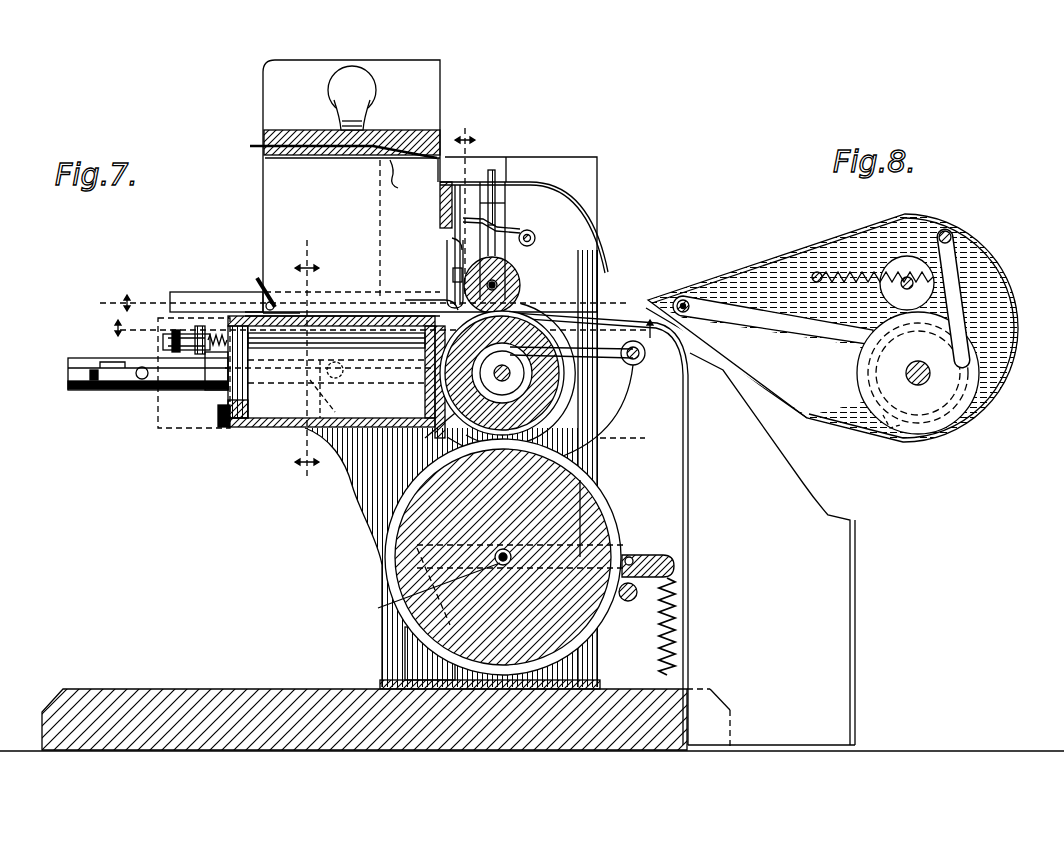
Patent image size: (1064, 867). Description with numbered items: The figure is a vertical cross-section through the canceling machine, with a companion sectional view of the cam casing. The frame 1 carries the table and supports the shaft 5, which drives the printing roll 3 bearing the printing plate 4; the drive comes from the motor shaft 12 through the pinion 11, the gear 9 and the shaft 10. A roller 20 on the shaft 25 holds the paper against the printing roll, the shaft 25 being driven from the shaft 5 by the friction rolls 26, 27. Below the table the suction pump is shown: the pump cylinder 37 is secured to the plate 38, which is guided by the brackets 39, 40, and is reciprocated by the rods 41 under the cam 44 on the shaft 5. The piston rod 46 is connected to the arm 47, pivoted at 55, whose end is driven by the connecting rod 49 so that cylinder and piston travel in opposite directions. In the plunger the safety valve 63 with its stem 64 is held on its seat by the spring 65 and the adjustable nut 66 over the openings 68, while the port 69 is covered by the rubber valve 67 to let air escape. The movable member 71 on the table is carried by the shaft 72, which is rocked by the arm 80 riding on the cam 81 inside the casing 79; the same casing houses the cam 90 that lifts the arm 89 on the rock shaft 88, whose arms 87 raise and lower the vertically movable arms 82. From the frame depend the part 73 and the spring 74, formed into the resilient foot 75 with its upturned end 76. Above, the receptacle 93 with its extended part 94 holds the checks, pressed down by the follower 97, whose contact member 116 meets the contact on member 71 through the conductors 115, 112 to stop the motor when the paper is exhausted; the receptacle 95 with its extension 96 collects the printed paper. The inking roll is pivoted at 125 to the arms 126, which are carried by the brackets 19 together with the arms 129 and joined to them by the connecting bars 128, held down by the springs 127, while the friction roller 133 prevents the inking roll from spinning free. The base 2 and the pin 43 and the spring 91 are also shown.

In FIG. 7, the frame 1 is at (378, 503).
In FIG. 7, the base 2 is at (312, 698).
In FIG. 7, the printing roll 3 is at (590, 360).
In FIG. 7, the printing plate 4 is at (505, 326).
In FIG. 7, the shaft 5 is at (446, 440).
In FIG. 8, the shaft 5 is at (918, 385).
In FIG. 7, the gear 9 is at (364, 304).
In FIG. 7, the shaft 10 is at (378, 328).
In FIG. 7, the pinion 11 is at (304, 364).
In FIG. 7, the shaft 12 is at (440, 215).
In FIG. 7, the brackets 19 is at (362, 660).
In FIG. 7, the roller 20 is at (512, 282).
In FIG. 7, the shaft 25 is at (497, 285).
In FIG. 8, the shaft 25 is at (893, 287).
In FIG. 8, the friction roll 26 is at (857, 393).
In FIG. 8, the friction roll 27 is at (905, 258).
In FIG. 7, the pump cylinder 37 is at (170, 428).
In FIG. 7, the plate 38 is at (432, 340).
In FIG. 7, the bracket 39 is at (184, 292).
In FIG. 7, the bracket 40 is at (174, 333).
In FIG. 7, the rods 41 is at (372, 349).
In FIG. 7, the pin 43 is at (338, 380).
In FIG. 7, the eccentric or cam 44 is at (598, 405).
In FIG. 7, the piston rod 46 is at (100, 390).
In FIG. 7, the arm 47 is at (72, 362).
In FIG. 7, the connecting rod 49 is at (332, 408).
In FIG. 7, the pivot 55 is at (163, 342).
In FIG. 7, the valve 63 is at (250, 352).
In FIG. 7, the stem 64 is at (140, 390).
In FIG. 7, the spring 65 is at (220, 335).
In FIG. 7, the adjustable nut 66 is at (198, 328).
In FIG. 7, the valve 67 is at (222, 424).
In FIG. 7, the openings 68 is at (210, 390).
In FIG. 7, the port 69 is at (248, 408).
In FIG. 7, the movable member 71 is at (325, 313).
In FIG. 7, the shaft 72 is at (292, 300).
In FIG. 8, the shaft 72 is at (684, 298).
In FIG. 7, the depending part 73 is at (452, 262).
In FIG. 7, the depending spring 74 is at (450, 250).
In FIG. 7, the resilient foot 75 is at (417, 300).
In FIG. 7, the extended end 76 is at (447, 292).
In FIG. 8, the casing 79 is at (1020, 378).
In FIG. 8, the arm 80 is at (768, 320).
In FIG. 8, the cam 81 is at (985, 406).
In FIG. 7, the vertically movable arms 82 is at (452, 275).
In FIG. 7, the arms 87 is at (523, 233).
In FIG. 7, the rock shaft 88 is at (535, 238).
In FIG. 8, the rock shaft 88 is at (947, 232).
In FIG. 8, the arm 89 is at (962, 290).
In FIG. 8, the cam 90 is at (897, 430).
In FIG. 8, the spring 91 is at (836, 275).
In FIG. 7, the receptacle 93 is at (300, 74).
In FIG. 7, the extended part 94 is at (575, 200).
In FIG. 7, the receptacle 95 is at (855, 640).
In FIG. 7, the extended part 96 is at (600, 455).
In FIG. 7, the follower 97 is at (327, 146).
In FIG. 7, the conductor 112 is at (287, 302).
In FIG. 7, the conductor 115 is at (350, 313).
In FIG. 7, the contact member 116 is at (408, 181).
In FIG. 7, the pivot 125 is at (418, 593).
In FIG. 7, the arms 126 is at (652, 553).
In FIG. 7, the springs 127 is at (677, 625).
In FIG. 7, the connecting bars 128 is at (640, 460).
In FIG. 7, the arms 129 is at (690, 396).
In FIG. 7, the friction roller 133 is at (636, 601).